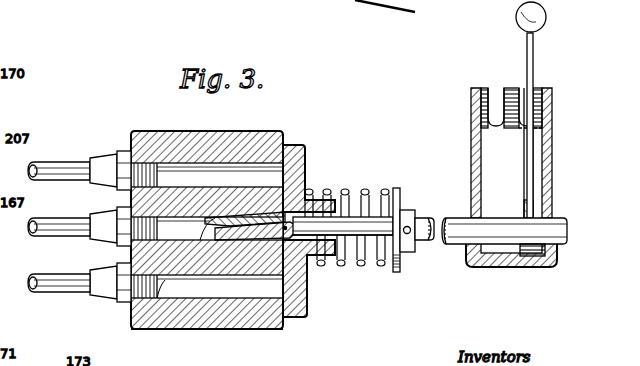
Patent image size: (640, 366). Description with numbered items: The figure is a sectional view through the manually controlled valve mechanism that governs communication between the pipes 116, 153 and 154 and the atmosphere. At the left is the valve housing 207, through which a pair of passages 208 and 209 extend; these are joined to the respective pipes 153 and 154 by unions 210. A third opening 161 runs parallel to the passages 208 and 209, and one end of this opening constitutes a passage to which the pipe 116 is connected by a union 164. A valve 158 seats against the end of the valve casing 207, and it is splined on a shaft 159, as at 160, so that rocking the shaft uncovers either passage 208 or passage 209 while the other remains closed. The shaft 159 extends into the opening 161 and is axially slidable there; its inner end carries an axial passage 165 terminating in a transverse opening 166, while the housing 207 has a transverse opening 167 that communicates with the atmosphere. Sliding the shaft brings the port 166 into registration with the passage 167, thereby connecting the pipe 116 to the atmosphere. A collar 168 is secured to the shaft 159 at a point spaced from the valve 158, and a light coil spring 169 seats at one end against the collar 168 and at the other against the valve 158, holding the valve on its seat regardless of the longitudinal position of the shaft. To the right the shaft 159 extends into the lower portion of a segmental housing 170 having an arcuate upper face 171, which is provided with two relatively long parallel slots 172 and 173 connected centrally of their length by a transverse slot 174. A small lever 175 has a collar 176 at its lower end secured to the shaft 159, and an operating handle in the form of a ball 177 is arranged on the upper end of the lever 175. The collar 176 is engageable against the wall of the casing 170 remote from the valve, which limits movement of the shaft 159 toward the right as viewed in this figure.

The pipe 116 is at (50, 220).
The pipe 153 is at (55, 296).
The pipe 154 is at (58, 168).
The valve 158 is at (305, 145).
The shaft 159 is at (375, 240).
The spline 160 is at (316, 200).
The opening 161 is at (175, 289).
The union 164 is at (100, 224).
The axial passage 165 is at (239, 226).
The transverse opening 166 is at (220, 286).
The transverse opening 167 is at (220, 176).
The collar 168 is at (398, 190).
The coil spring 169 is at (368, 190).
The segmental housing 170 is at (472, 106).
The arcuate upper face 171 is at (510, 90).
The slot 172 is at (487, 88).
The slot 173 is at (525, 110).
The transverse slot 174 is at (527, 48).
The lever 175 is at (527, 164).
The collar 176 is at (530, 257).
The ball 177 is at (518, 22).
The valve housing 207 is at (245, 133).
The passage 208 is at (227, 292).
The passage 209 is at (185, 170).
The union 210 is at (105, 160).